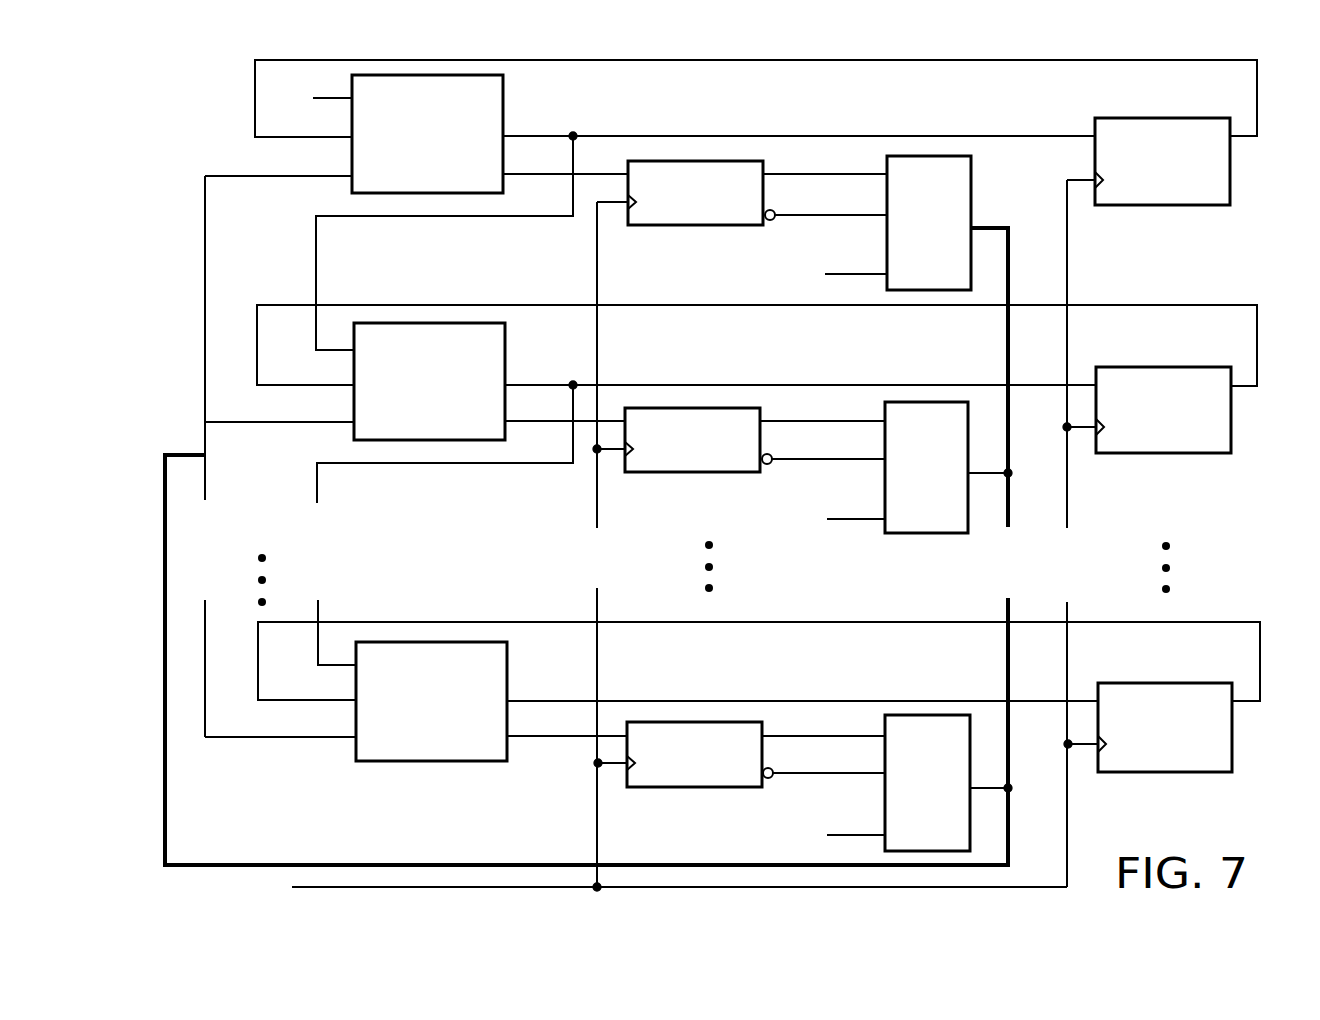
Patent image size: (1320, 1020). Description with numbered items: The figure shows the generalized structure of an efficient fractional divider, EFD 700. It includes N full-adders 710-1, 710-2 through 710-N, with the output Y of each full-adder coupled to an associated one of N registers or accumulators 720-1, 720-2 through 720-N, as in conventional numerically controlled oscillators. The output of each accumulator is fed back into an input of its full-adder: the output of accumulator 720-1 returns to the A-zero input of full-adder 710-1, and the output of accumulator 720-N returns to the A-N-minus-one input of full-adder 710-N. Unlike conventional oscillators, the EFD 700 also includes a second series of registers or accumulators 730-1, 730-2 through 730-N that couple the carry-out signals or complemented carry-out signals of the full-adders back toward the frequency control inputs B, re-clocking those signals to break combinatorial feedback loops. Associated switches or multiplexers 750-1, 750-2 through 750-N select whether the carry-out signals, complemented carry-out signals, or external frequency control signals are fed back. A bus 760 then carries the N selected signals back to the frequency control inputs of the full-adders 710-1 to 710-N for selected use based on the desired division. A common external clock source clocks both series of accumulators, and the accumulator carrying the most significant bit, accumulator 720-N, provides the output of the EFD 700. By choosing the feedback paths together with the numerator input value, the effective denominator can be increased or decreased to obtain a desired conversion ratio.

The efficient fractional divider 700 is at (1253, 485).
The full-adder 710-1 is at (423, 111).
The full-adder 710-2 is at (423, 362).
The full-adder 710-N is at (427, 677).
The accumulator 720-1 is at (1133, 175).
The accumulator 720-2 is at (1134, 424).
The accumulator 720-N is at (1136, 740).
The accumulator 730-1 is at (667, 206).
The accumulator 730-2 is at (664, 454).
The accumulator 730-N is at (665, 767).
The multiplexer 750-1 is at (963, 240).
The multiplexer 750-2 is at (959, 485).
The multiplexer 750-N is at (961, 800).
The bus 760 is at (1007, 518).